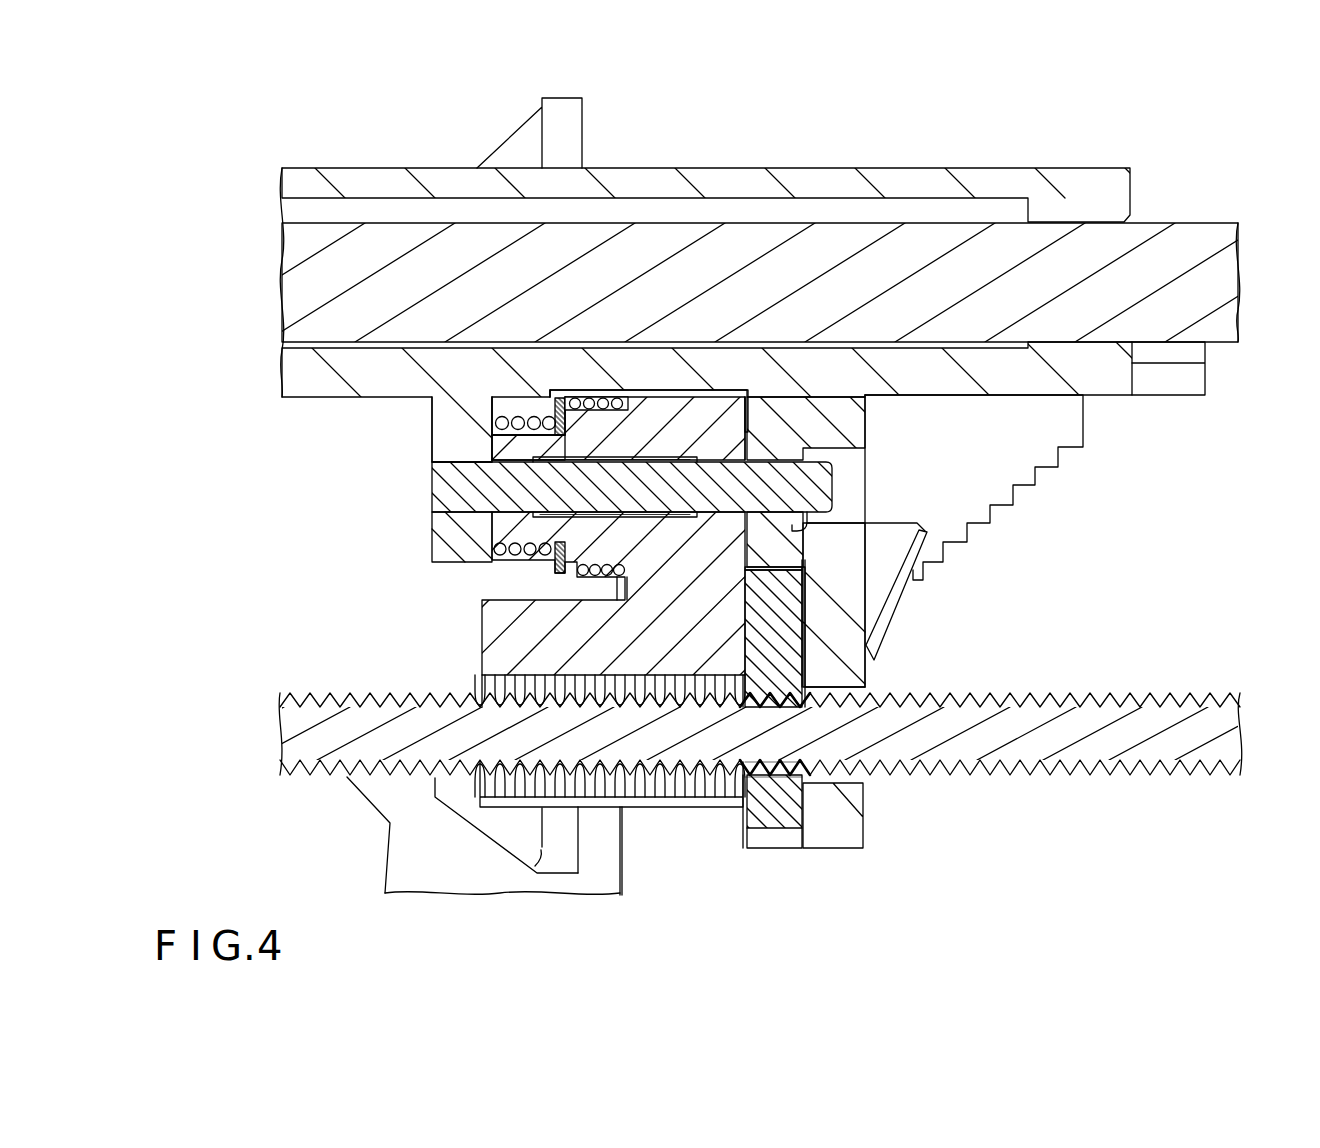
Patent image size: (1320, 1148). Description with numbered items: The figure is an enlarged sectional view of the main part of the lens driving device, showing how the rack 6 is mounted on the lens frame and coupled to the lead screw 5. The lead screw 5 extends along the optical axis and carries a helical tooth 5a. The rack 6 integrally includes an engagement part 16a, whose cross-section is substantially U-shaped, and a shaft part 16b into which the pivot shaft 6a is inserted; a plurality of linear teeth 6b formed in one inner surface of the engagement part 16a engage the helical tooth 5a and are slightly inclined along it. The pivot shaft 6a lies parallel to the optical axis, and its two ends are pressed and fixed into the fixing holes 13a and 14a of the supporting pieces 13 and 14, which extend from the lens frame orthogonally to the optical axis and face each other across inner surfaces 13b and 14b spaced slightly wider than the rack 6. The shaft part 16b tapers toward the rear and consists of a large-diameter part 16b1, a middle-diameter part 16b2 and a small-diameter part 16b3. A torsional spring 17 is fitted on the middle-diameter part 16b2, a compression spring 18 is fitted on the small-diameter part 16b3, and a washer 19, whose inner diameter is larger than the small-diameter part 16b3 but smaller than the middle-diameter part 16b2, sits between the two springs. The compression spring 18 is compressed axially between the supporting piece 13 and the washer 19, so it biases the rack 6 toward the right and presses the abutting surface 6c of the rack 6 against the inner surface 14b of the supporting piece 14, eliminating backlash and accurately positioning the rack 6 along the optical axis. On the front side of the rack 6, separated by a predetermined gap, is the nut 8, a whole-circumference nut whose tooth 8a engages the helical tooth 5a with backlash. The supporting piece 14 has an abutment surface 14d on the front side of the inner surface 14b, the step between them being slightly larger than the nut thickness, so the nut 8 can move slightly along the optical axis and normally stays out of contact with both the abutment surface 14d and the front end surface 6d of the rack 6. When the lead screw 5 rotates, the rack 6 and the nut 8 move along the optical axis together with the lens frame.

The lead screw 5 is at (1076, 748).
The helical tooth 5a is at (392, 697).
The rack 6 is at (835, 135).
The pivot shaft 6a is at (440, 482).
The teeth 6b is at (698, 787).
The abutting surface 6c is at (747, 445).
The front end surface 6d is at (752, 592).
The nut 8 is at (780, 830).
The tooth 8a is at (837, 777).
The supporting piece 13 is at (447, 547).
The fixing hole 13a is at (432, 453).
The inner surface 13b is at (500, 523).
The supporting piece 14 is at (843, 828).
The fixing hole 14a is at (797, 530).
The inner surface 14b is at (733, 530).
The abutment surface 14d is at (803, 655).
The engagement part 16a is at (700, 660).
The shaft part 16b is at (733, 410).
The large-diameter part 16b1 is at (668, 393).
The middle-diameter part 16b2 is at (593, 423).
The small-diameter part 16b3 is at (523, 445).
The torsional spring 17 is at (612, 410).
The compression spring 18 is at (500, 425).
The washer 19 is at (560, 412).